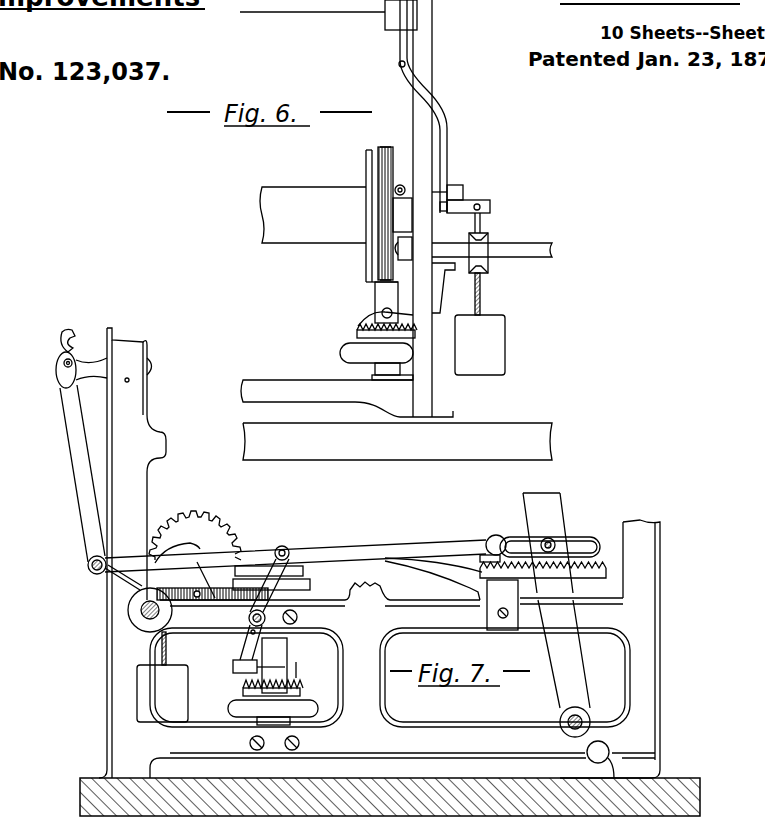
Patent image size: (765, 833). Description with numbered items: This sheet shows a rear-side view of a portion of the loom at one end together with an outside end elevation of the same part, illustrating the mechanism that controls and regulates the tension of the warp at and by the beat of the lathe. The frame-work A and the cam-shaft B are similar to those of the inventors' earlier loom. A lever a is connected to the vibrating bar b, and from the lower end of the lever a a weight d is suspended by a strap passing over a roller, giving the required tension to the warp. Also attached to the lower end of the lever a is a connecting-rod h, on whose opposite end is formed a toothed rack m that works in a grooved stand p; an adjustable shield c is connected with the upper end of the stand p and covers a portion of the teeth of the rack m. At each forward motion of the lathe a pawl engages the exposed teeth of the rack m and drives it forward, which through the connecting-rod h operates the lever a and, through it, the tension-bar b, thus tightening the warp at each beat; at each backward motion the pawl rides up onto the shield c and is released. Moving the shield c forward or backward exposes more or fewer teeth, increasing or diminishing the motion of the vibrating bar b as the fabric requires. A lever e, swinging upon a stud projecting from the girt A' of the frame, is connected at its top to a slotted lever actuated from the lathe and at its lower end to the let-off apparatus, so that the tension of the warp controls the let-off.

In FIG. 6, the lever a is at (478, 243).
In FIG. 7, the lever a is at (81, 463).
In FIG. 6, the cord s is at (483, 294).
In FIG. 6, the weight d is at (480, 345).
In FIG. 7, the weight d is at (146, 643).
In FIG. 7, the frame-work A is at (379, 553).
In FIG. 7, the girt A' is at (390, 654).
In FIG. 7, the connecting-rod h is at (59, 342).
In FIG. 7, the grooved stand p is at (543, 615).
In FIG. 7, the toothed rack m is at (543, 575).
In FIG. 7, the adjustable shield c is at (490, 556).
In FIG. 7, the lever e is at (271, 609).
In FIG. 7, the cam-shaft B is at (273, 681).
In FIG. 7, the vibrating bar b is at (294, 663).